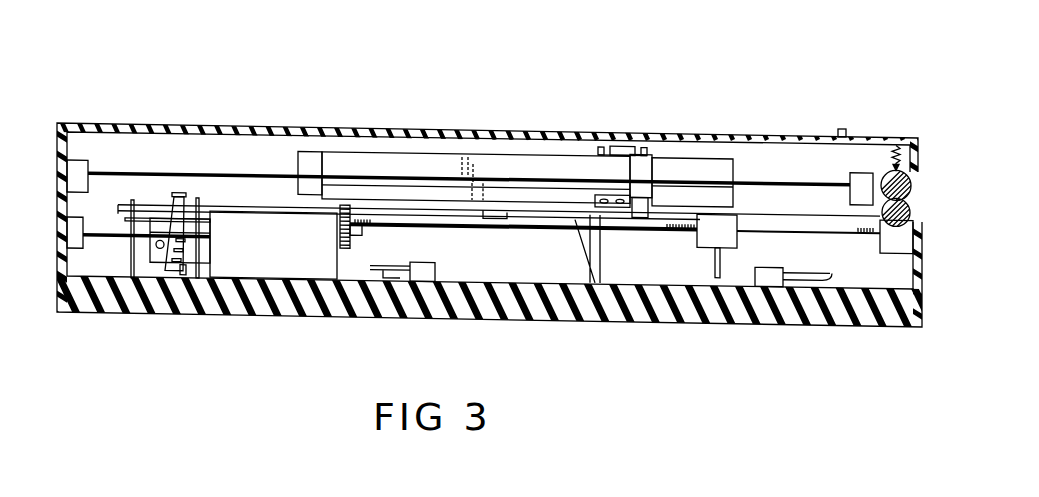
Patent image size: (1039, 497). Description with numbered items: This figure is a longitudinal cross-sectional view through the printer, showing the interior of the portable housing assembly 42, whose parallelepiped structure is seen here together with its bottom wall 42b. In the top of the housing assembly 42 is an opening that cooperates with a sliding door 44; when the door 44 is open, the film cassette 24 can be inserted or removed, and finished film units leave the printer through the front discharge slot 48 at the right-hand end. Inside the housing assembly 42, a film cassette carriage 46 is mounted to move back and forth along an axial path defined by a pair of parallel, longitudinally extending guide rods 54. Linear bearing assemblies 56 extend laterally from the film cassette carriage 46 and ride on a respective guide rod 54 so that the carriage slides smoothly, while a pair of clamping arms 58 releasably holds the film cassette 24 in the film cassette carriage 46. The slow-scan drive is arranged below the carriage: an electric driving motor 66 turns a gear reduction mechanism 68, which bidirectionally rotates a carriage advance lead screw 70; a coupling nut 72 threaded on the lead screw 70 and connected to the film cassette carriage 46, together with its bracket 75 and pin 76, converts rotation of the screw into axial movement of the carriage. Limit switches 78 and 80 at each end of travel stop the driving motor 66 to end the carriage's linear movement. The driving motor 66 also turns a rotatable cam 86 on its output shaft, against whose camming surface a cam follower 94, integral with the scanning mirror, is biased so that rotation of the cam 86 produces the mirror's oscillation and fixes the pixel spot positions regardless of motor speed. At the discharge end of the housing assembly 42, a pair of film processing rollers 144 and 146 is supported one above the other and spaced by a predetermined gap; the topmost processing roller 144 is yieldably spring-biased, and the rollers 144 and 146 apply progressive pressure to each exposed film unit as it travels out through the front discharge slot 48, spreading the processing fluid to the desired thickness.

The portable housing assembly 42 is at (201, 110).
The housing bottom wall 42b is at (345, 311).
The door 44 is at (757, 137).
The front discharge slot 48 is at (940, 197).
The guide rods 54 is at (193, 175).
The linear bearing assemblies 56 is at (305, 155).
The film cassette carriage 46 is at (413, 162).
The film cassette 24 is at (700, 163).
The clamping arms 58 is at (622, 145).
The bracket 75 is at (660, 222).
The carriage advance lead screw 70 is at (497, 229).
The coupling nut 72 is at (737, 238).
The pin 76 is at (713, 264).
The electric driving motor 66 is at (243, 262).
The gear reduction mechanism 68 is at (366, 237).
The limit switch 78 is at (432, 268).
The limit switch 80 is at (780, 268).
The cam follower 94 is at (160, 248).
The rotatable cam 86 is at (180, 195).
The processing roller 144 is at (912, 178).
The processing roller 146 is at (916, 210).